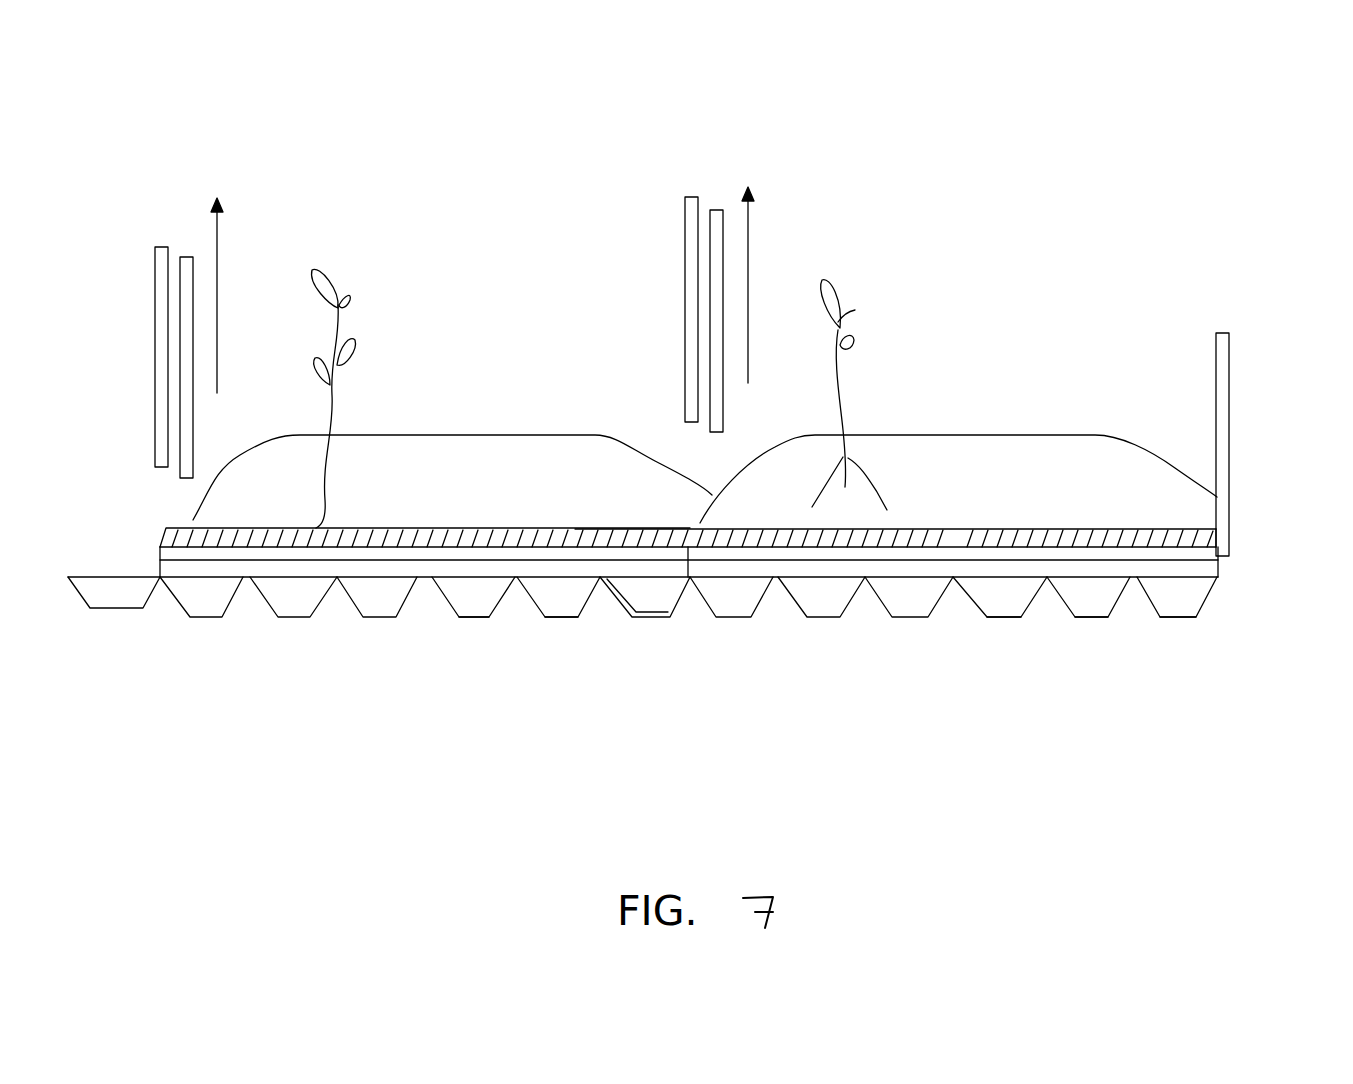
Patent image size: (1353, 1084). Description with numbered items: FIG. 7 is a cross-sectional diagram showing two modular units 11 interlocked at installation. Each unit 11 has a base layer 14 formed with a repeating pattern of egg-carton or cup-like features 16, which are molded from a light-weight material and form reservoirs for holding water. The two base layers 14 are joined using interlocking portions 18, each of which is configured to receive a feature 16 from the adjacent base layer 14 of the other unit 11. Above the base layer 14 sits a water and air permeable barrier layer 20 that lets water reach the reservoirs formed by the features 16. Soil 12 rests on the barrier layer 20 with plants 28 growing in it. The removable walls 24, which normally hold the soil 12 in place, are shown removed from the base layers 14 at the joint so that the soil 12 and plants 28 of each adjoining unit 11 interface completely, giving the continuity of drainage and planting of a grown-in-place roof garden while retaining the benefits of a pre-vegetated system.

The unit 11 is at (548, 216).
The soil 12 is at (397, 447).
The base layer 14 is at (403, 607).
The cup-like features 16 is at (485, 613).
The interlocking portion 18 is at (120, 603).
The water and air permeable barrier layer 20 is at (158, 547).
The removable walls 24 is at (183, 255).
The plants 28 is at (340, 293).